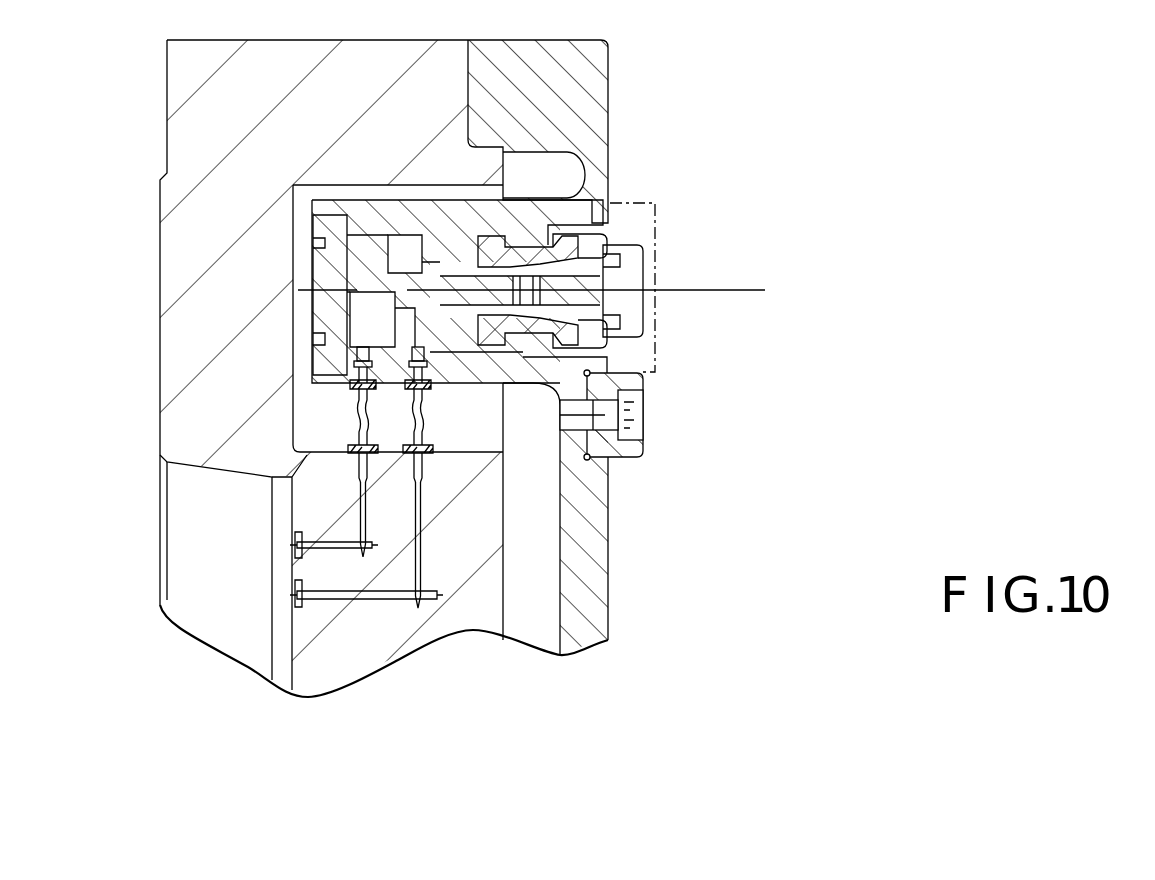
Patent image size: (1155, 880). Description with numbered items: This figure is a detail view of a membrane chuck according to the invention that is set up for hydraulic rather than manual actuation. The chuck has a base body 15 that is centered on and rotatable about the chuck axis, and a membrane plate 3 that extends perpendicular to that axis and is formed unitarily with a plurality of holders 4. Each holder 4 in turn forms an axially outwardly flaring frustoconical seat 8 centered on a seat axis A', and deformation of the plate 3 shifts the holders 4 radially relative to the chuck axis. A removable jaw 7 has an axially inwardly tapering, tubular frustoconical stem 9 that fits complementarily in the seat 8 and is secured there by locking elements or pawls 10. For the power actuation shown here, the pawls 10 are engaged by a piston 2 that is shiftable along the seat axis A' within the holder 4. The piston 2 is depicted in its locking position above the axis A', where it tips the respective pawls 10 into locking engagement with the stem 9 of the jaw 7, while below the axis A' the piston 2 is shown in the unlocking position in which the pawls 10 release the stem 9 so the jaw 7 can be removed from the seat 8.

The piston 2 is at (385, 250).
The membrane plate 3 is at (597, 590).
The holder 4 is at (457, 372).
The jaw 7 is at (642, 223).
The seat 8 is at (645, 400).
The stem 9 is at (592, 225).
The pawl 10 is at (545, 310).
The base body 15 is at (345, 650).
The seat axis A' is at (570, 300).